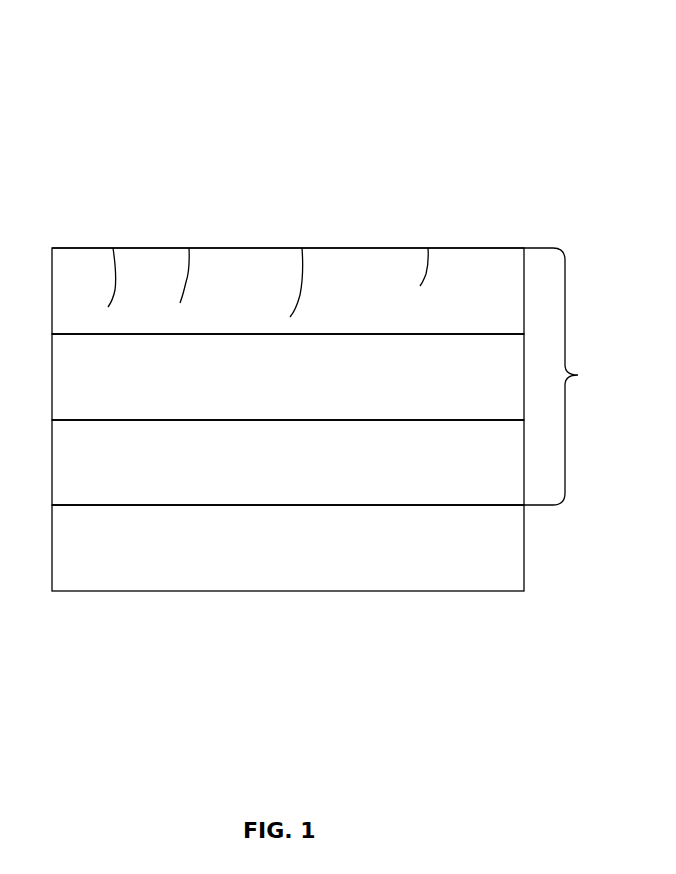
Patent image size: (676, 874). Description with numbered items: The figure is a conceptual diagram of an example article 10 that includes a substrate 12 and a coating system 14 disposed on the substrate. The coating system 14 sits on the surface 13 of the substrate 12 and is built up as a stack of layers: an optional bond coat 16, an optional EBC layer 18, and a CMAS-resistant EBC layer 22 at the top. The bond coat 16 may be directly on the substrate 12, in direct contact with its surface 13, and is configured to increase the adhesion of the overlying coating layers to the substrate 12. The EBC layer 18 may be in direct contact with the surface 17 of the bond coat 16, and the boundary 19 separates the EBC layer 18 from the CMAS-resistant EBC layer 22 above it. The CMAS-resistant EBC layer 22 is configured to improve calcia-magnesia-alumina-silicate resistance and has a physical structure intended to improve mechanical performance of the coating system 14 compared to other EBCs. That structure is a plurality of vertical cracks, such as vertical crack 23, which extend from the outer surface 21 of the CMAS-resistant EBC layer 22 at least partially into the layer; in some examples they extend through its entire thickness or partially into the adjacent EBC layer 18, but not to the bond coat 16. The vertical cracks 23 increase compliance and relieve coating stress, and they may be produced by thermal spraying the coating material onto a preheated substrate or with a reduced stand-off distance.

The article 10 is at (498, 87).
The substrate 12 is at (52, 556).
The surface of substrate 13 is at (510, 504).
The coating system 14 is at (565, 376).
The bond coat 16 is at (52, 472).
The surface of bond coat 17 is at (510, 419).
The EBC layer 18 is at (52, 392).
The third interface 19 is at (510, 333).
The surface of CMAS-EBC 21 is at (510, 247).
The CMAS-resistant EBC layer 22 is at (52, 306).
The vertical crack 23 is at (303, 248).